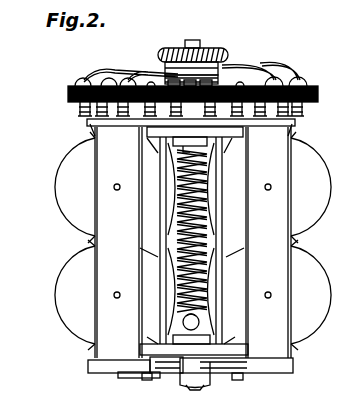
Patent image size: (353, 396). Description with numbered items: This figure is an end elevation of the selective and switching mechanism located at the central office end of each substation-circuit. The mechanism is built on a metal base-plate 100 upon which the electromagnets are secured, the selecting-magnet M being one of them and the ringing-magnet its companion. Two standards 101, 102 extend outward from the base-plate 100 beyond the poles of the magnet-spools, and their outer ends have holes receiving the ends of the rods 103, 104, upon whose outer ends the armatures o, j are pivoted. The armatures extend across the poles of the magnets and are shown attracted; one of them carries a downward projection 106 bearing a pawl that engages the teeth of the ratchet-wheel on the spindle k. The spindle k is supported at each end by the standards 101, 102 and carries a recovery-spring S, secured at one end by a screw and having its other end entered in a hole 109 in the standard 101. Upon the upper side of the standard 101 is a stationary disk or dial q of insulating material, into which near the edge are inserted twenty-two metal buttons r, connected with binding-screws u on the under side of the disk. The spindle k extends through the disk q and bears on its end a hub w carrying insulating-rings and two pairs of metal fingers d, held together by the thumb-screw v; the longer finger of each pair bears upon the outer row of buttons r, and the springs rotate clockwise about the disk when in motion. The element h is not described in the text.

The spindle k is at (193, 43).
The thumb-screw v is at (197, 60).
The metal fingers d is at (257, 70).
The metal buttons r is at (191, 78).
The hub w is at (198, 80).
The stationary disk or dial q is at (323, 84).
The binding-screws u is at (73, 100).
The metal base-plate 100 is at (307, 112).
The standard 101 is at (147, 128).
The hole 109 is at (196, 147).
The rod 104 is at (157, 240).
The rod 103 is at (227, 240).
The recovery-spring S is at (182, 258).
The spring coil h is at (199, 232).
The downward projection 106 is at (183, 323).
The standard 102 is at (146, 347).
The electromagnet M is at (75, 241).
The armature o is at (92, 350).
The armature j is at (290, 354).